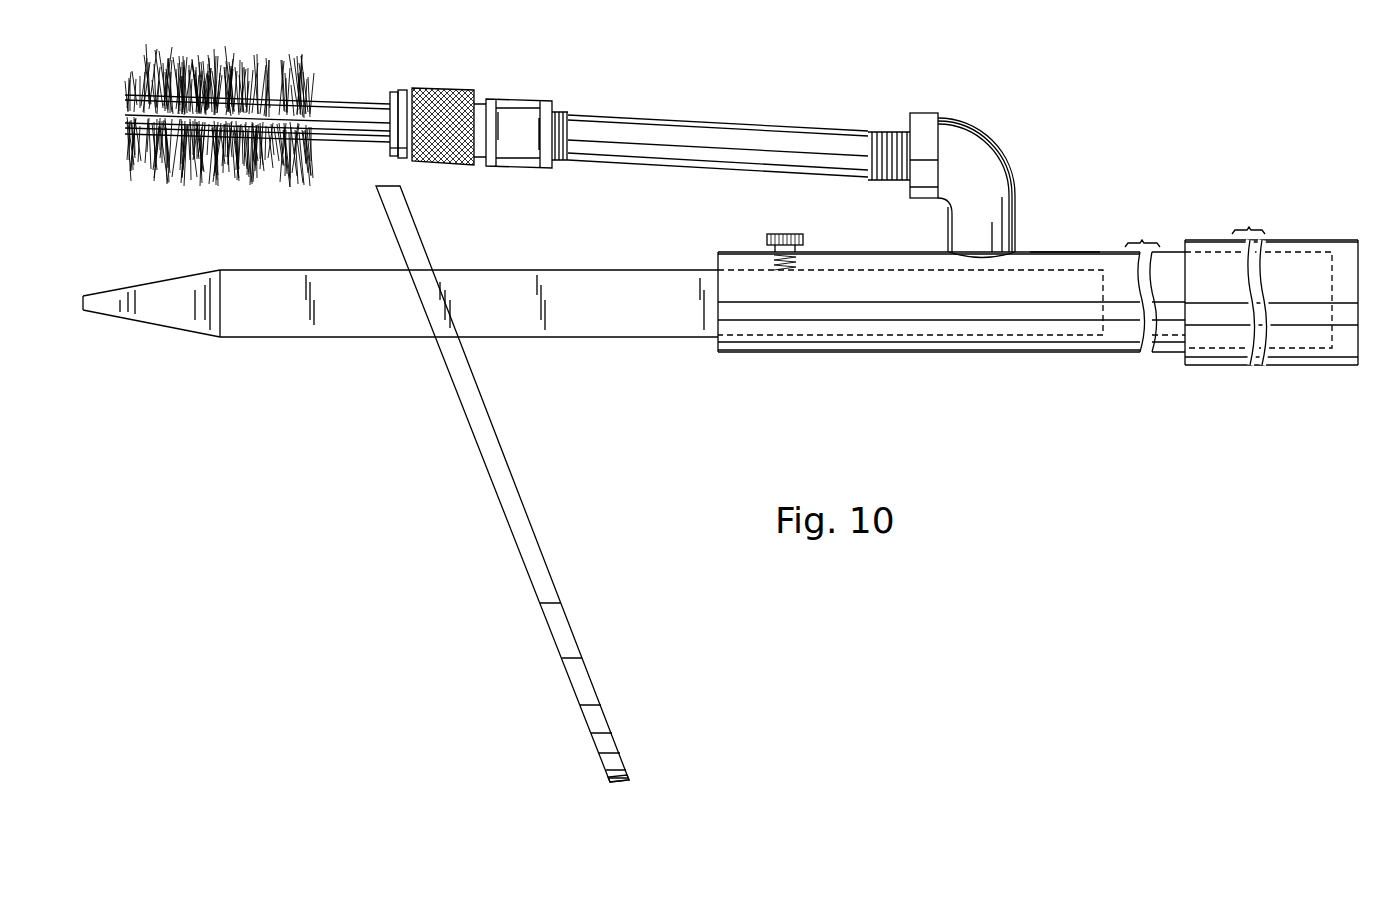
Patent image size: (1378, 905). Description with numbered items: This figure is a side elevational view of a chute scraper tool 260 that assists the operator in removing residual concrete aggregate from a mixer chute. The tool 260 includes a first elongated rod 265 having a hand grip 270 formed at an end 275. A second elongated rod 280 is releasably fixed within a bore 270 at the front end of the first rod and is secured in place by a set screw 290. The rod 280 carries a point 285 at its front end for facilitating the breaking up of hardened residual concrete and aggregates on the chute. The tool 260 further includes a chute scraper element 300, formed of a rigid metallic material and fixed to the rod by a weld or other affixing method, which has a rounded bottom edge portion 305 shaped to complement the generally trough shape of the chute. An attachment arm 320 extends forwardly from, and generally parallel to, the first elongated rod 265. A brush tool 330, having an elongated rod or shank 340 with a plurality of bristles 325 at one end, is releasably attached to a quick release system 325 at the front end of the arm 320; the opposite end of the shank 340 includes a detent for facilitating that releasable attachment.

The chute scraper tool 260 is at (1000, 315).
The elongated rod 265 is at (1065, 255).
The hand grip / bore 270 is at (740, 272).
The end 275 is at (1288, 372).
The elongated rod 280 is at (345, 322).
The point 285 is at (83, 303).
The set screw 290 is at (788, 233).
The chute scraper element 300 is at (565, 612).
The rounded bottom edge portion 305 is at (617, 792).
The attachment arm 320 is at (862, 127).
The quick release system / bristles 325 is at (130, 101).
The brush tool 330 is at (315, 107).
The elongated rod or shank 340 is at (346, 126).